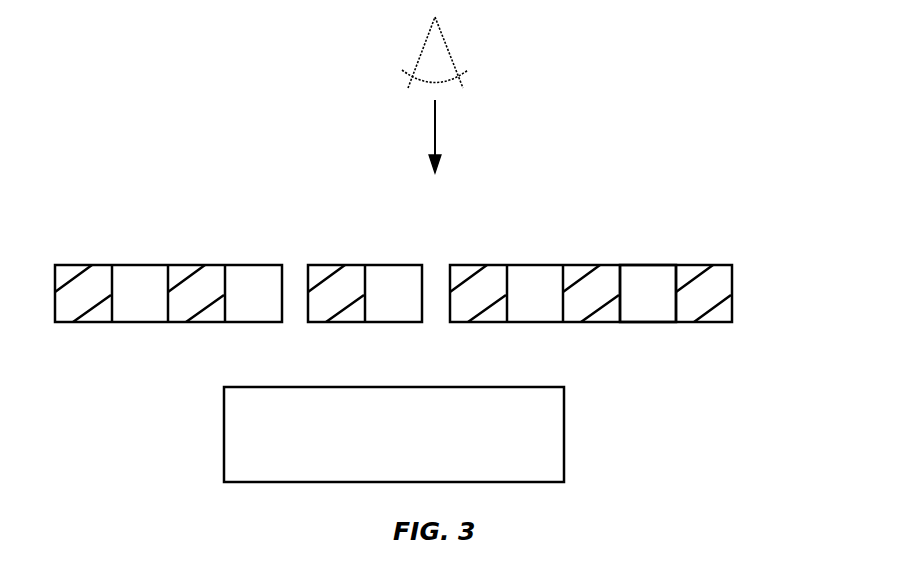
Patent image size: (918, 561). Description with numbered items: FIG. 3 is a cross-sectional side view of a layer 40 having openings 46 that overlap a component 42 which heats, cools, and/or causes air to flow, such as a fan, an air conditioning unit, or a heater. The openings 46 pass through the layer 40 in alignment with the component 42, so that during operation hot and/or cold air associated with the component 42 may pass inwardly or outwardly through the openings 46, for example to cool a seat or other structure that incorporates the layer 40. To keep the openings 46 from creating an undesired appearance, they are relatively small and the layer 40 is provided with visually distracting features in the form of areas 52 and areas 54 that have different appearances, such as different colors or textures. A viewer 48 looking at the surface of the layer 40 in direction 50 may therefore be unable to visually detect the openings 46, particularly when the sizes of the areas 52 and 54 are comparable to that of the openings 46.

The layer 40 is at (438, 265).
The component 42 is at (553, 435).
The openings 46 is at (294, 258).
The viewer 48 is at (438, 43).
The direction 50 is at (436, 128).
The areas 52 is at (592, 278).
The areas 54 is at (647, 280).